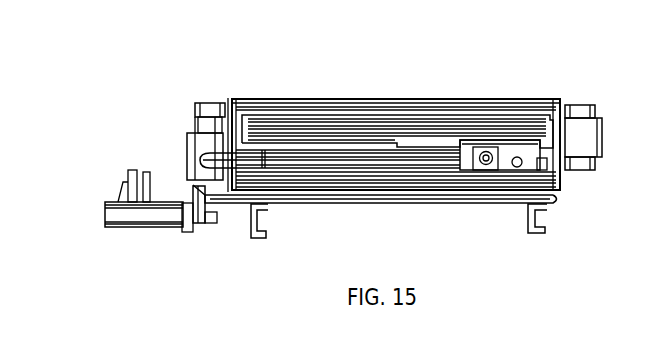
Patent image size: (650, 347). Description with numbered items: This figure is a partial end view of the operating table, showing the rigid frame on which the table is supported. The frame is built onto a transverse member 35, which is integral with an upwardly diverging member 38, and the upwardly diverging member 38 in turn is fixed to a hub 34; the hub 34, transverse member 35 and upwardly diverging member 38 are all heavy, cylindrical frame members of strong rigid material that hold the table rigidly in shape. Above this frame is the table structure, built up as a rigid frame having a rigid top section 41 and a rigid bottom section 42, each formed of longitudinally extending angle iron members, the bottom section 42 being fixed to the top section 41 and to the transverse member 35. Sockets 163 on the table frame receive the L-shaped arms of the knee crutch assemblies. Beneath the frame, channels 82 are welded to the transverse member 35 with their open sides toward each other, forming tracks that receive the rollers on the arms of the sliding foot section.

The socket 163 is at (193, 125).
The rigid top section 41 is at (482, 100).
The rigid bottom section 42 is at (562, 187).
The transverse member 35 is at (340, 201).
The upwardly diverging member 38 is at (214, 212).
The hub 34 is at (137, 230).
The channel 82 is at (265, 238).